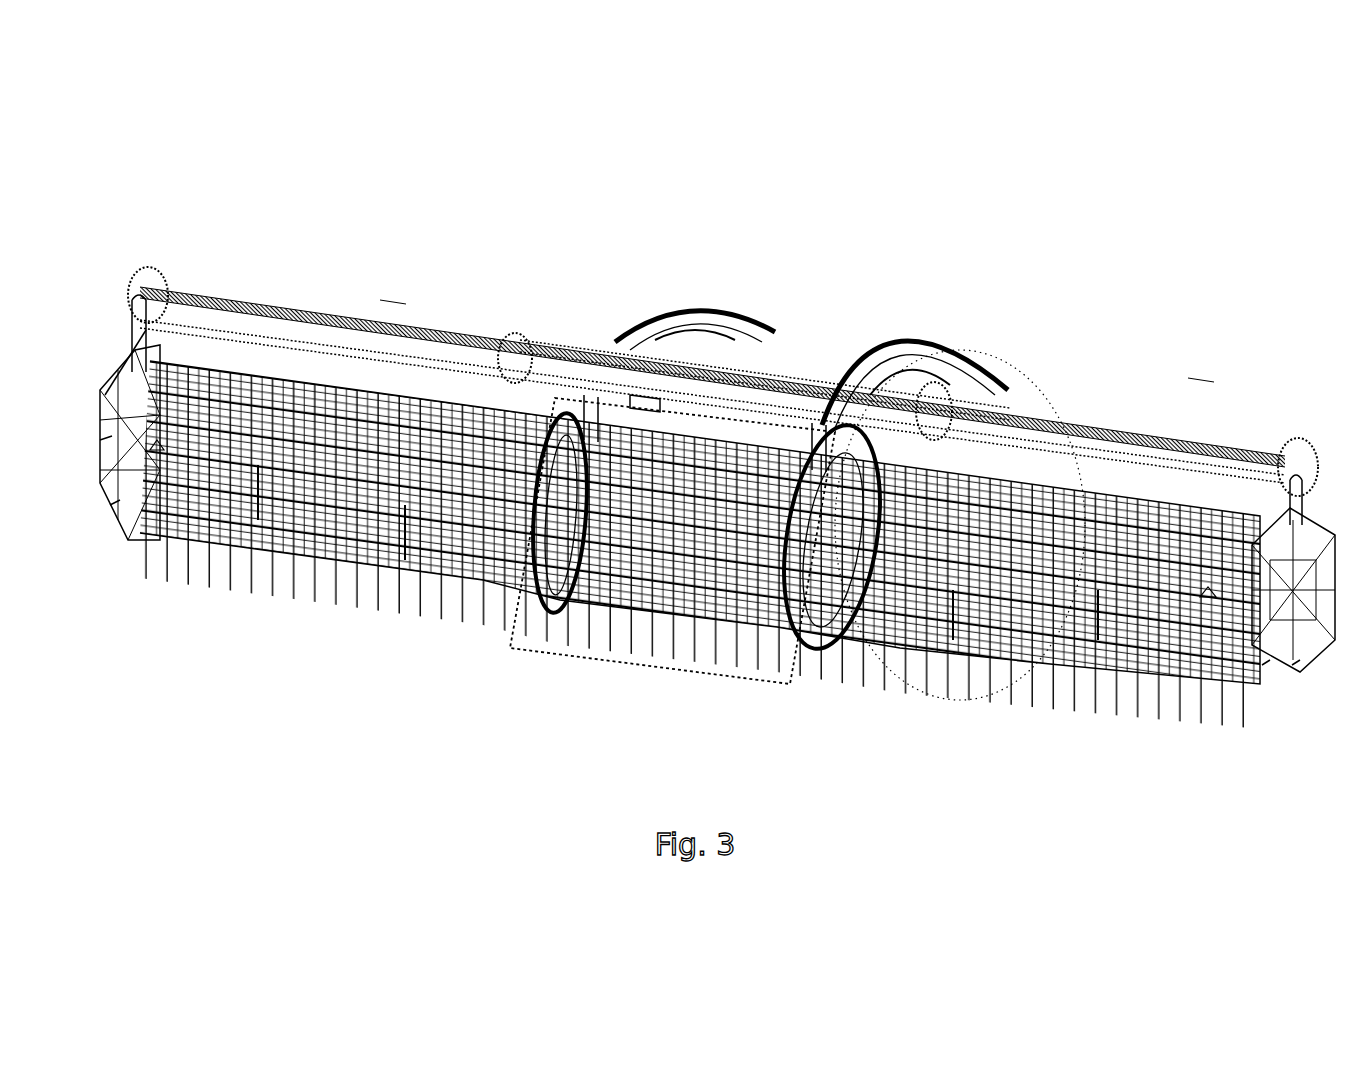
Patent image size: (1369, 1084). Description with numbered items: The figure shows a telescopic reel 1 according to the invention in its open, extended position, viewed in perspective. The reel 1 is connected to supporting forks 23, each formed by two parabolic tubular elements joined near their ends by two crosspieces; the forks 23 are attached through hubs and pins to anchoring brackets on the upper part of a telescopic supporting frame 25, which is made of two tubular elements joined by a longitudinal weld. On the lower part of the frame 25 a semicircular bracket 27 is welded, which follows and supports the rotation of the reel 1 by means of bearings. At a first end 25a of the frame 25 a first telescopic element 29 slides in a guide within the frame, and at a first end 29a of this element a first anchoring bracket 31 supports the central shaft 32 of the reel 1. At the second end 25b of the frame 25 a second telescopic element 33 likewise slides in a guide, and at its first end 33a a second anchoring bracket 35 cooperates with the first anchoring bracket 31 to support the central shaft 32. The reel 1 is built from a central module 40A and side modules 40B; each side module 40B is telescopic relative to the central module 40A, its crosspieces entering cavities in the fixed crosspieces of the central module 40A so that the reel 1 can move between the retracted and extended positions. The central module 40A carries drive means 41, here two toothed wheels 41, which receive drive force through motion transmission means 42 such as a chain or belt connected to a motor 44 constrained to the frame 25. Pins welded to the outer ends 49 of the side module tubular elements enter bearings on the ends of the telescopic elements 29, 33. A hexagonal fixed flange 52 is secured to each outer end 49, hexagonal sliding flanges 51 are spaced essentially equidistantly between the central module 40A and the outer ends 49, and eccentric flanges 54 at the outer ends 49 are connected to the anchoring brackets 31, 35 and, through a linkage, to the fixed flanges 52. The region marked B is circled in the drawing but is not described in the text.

The reel 1 is at (985, 215).
The supporting forks 23 is at (708, 318).
The telescopic supporting frame 25 is at (740, 388).
The first end 25a is at (515, 330).
The second end 25b is at (938, 382).
The bracket 27 is at (590, 397).
The first telescopic element 29 is at (330, 320).
The first end 29a is at (152, 266).
The first anchoring bracket 31 is at (137, 325).
The central shaft 32 is at (157, 450).
The second telescopic element 33 is at (1170, 450).
The first end 33a is at (1293, 437).
The second anchoring bracket 35 is at (1315, 505).
The central module 40A is at (637, 665).
The side module 40B is at (393, 292).
The drive means 41 is at (568, 640).
The motion transmission means 42 is at (568, 610).
The motor 44 is at (637, 398).
The outer ends 49 is at (96, 421).
The sliding flanges 51 is at (258, 465).
The fixed flange 52 is at (110, 505).
The eccentric flanges 54 is at (100, 440).
The detail region B is at (1038, 385).